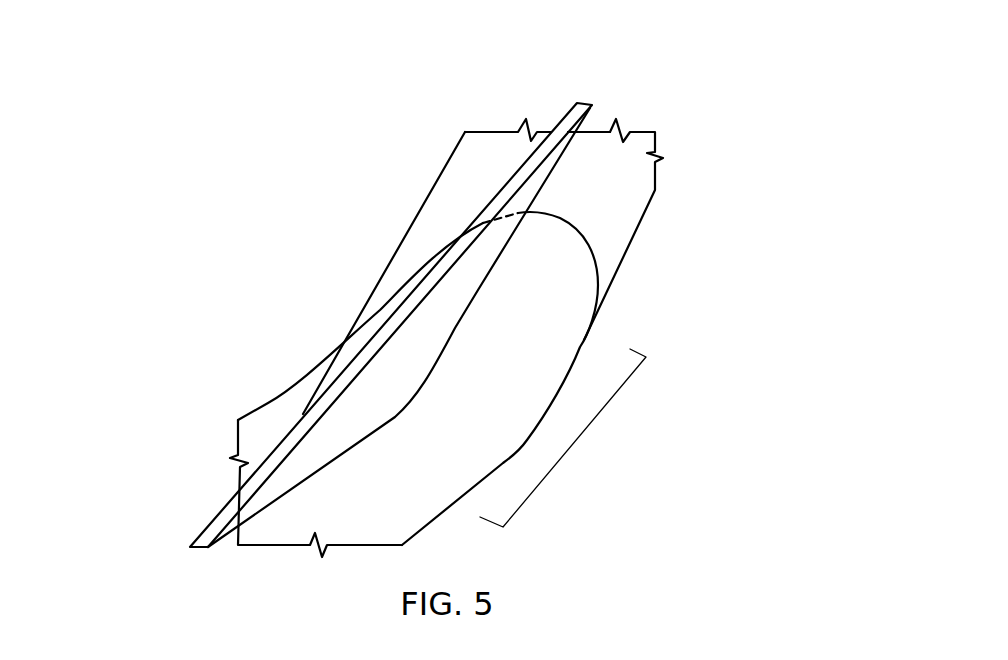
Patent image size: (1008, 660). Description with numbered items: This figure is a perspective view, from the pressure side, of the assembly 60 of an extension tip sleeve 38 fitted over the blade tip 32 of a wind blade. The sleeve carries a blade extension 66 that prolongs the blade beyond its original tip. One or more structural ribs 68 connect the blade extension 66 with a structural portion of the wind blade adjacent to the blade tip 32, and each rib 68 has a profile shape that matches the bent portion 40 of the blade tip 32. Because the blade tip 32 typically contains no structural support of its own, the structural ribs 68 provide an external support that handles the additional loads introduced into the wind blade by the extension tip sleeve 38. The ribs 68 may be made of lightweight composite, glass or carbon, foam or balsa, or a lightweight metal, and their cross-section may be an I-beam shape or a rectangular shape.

The assembly 60 is at (175, 76).
The extension tip sleeve 38 is at (642, 193).
The blade extension 66 is at (581, 193).
The blade tip 32 is at (560, 326).
The structural ribs 68 is at (362, 392).
The bent portion 40 is at (578, 449).